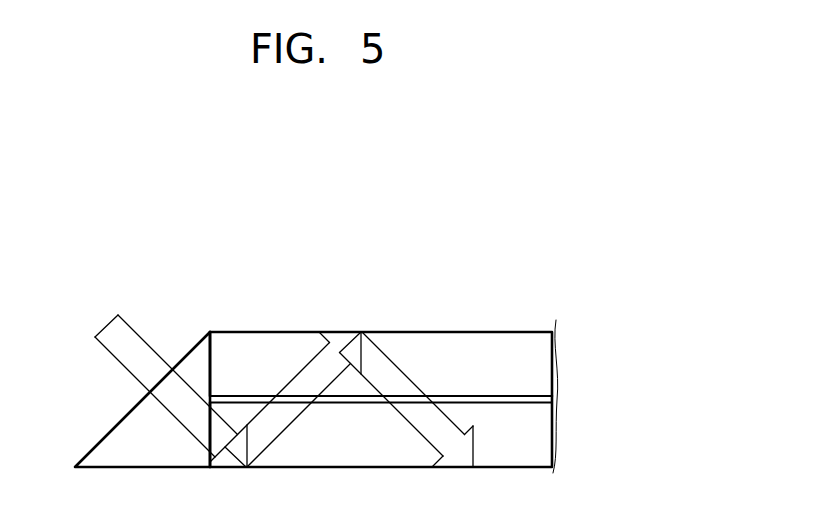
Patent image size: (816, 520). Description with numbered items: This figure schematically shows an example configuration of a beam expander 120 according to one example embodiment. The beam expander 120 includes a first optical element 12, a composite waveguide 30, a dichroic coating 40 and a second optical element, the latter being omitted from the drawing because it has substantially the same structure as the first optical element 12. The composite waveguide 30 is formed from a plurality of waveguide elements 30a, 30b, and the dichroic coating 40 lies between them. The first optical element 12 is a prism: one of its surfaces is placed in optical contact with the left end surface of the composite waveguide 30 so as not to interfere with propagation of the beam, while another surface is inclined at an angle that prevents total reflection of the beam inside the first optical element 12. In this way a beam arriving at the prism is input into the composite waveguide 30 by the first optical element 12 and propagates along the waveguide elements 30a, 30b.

The first optical element 12 is at (195, 361).
The composite waveguide 30 is at (637, 359).
The waveguide element 30a is at (545, 439).
The waveguide element 30b is at (545, 363).
The dichroic coating 40 is at (489, 396).
The beam expander 120 is at (612, 244).